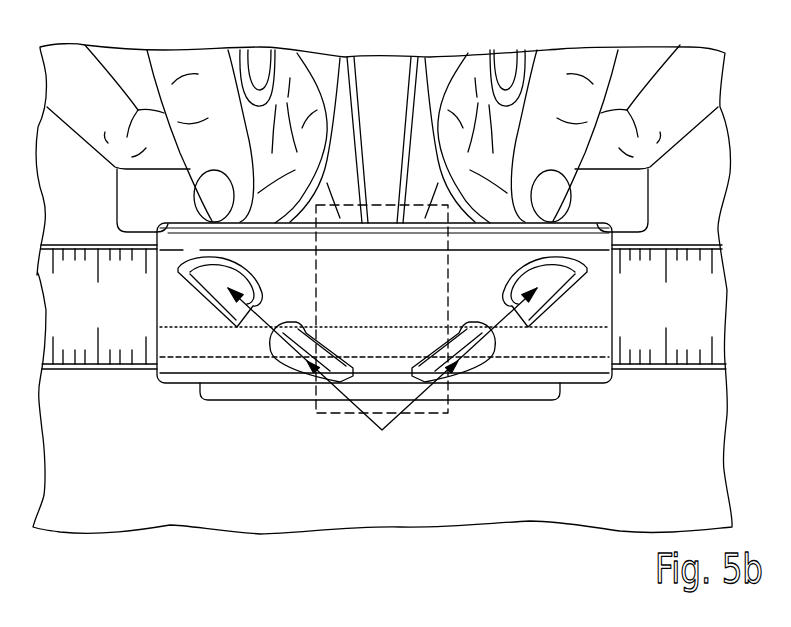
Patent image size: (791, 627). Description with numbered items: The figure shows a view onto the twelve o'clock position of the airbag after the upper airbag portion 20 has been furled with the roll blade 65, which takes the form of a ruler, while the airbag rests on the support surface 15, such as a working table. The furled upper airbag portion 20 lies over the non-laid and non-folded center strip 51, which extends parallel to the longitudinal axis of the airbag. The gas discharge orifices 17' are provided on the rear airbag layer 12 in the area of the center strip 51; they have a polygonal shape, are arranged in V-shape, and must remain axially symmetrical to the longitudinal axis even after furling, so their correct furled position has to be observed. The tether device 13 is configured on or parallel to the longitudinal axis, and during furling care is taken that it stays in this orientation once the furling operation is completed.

The rear airbag layer 12 is at (587, 233).
The tether device 13 is at (385, 363).
The support surface 15 is at (690, 504).
The gas discharge orifices 17' is at (390, 351).
The upper airbag portion 20 is at (382, 447).
The center strip 51 is at (392, 304).
The roll blade 65 is at (704, 322).